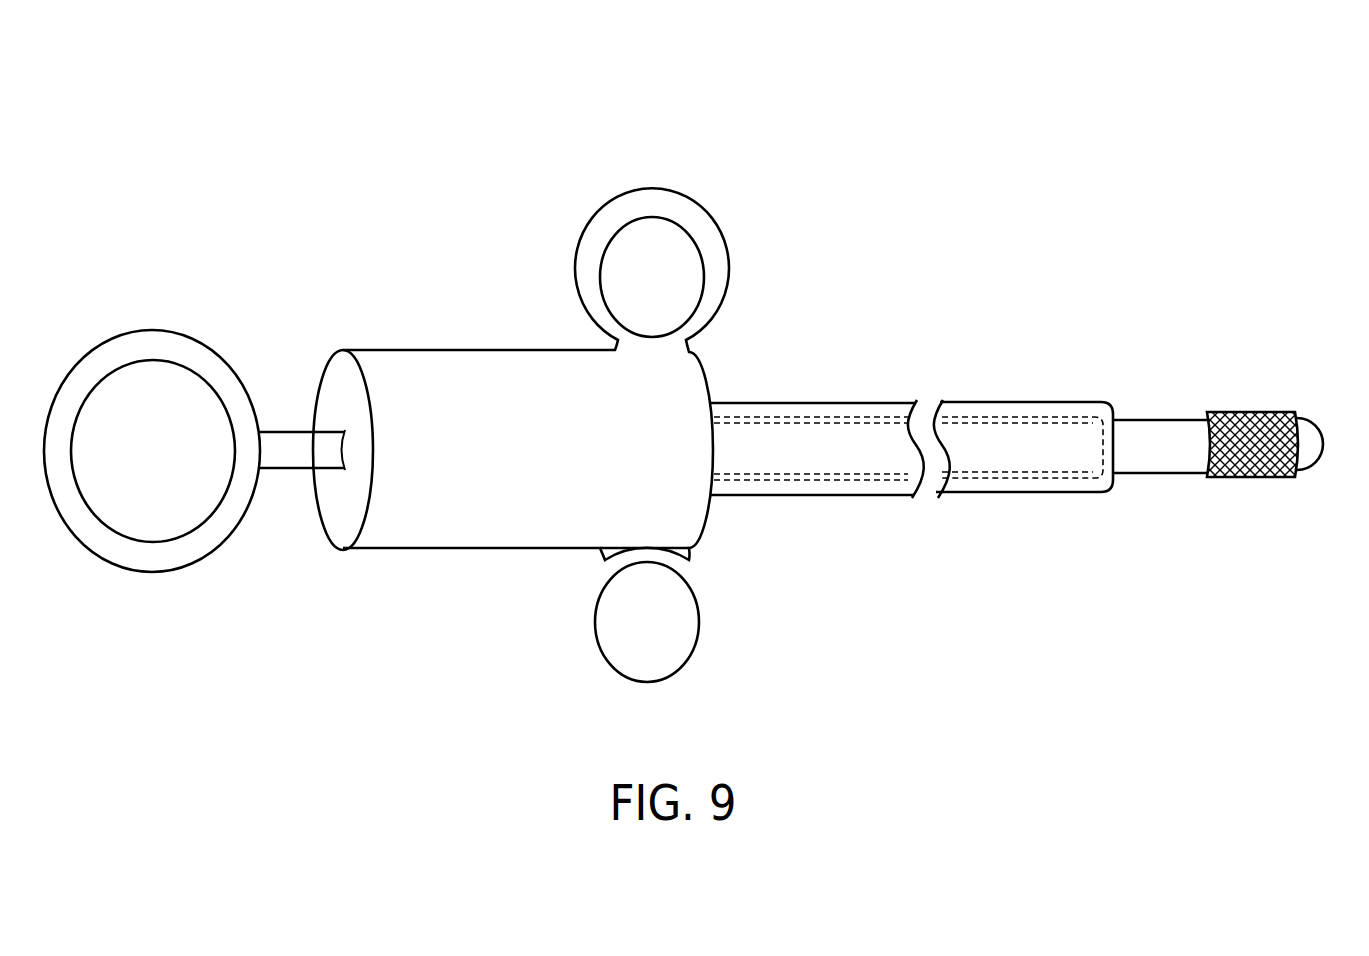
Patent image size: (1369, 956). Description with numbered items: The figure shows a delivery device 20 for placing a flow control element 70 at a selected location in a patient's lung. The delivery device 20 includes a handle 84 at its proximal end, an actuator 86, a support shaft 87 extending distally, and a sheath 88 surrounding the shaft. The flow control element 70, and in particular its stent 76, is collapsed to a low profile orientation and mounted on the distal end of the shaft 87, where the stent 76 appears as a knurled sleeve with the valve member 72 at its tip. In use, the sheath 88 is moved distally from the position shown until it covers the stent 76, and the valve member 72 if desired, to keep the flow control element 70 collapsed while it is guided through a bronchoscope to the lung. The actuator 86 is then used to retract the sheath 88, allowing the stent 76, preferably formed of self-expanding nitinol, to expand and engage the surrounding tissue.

The delivery device 20 is at (478, 150).
The handle 84 is at (456, 365).
The actuator 86 is at (177, 555).
The sheath 88 is at (1013, 400).
The support shaft 87 is at (1147, 433).
The flow control element 70 is at (1248, 392).
The stent 76 is at (1263, 477).
The valve member 72 is at (1315, 450).